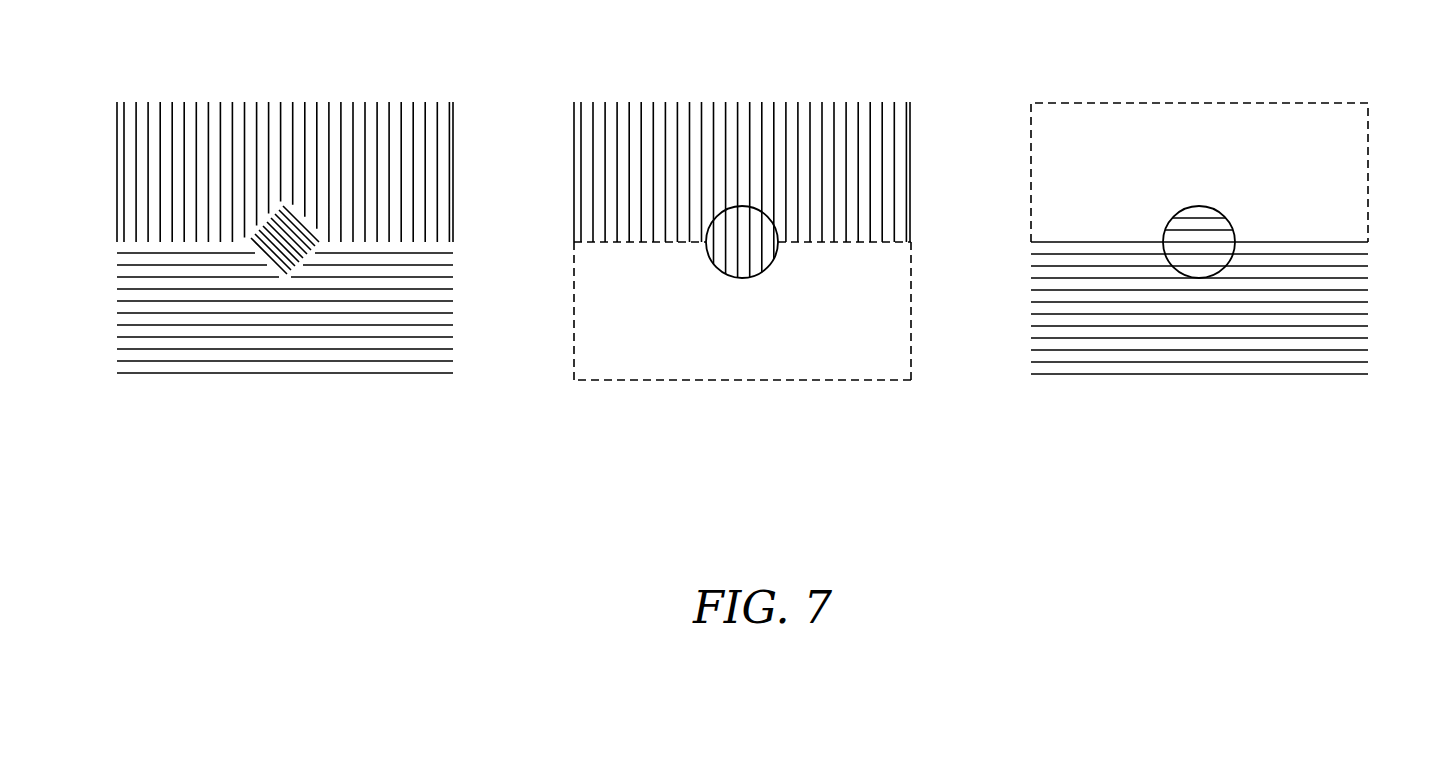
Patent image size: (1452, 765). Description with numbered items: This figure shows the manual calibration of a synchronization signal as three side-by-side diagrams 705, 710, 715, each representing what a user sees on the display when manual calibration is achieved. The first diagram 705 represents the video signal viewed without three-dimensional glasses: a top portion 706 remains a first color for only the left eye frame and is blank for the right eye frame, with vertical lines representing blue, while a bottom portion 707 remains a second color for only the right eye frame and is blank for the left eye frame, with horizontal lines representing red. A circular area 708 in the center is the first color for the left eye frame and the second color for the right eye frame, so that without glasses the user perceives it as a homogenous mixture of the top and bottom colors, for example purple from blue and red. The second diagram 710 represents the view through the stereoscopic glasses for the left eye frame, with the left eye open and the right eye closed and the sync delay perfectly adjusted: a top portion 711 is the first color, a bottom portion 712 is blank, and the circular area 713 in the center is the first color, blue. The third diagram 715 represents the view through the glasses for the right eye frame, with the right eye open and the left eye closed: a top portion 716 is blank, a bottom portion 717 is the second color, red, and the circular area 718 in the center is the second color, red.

The diagram 705 is at (308, 307).
The top portion 706 is at (223, 112).
The bottom portion 707 is at (293, 391).
The circular area 708 is at (285, 228).
The diagram 710 is at (768, 307).
The top portion 711 is at (724, 112).
The bottom portion 712 is at (755, 391).
The circular area 713 is at (745, 226).
The diagram 715 is at (1225, 308).
The top portion 716 is at (1182, 113).
The bottom portion 717 is at (1213, 391).
The circular area 718 is at (1200, 228).